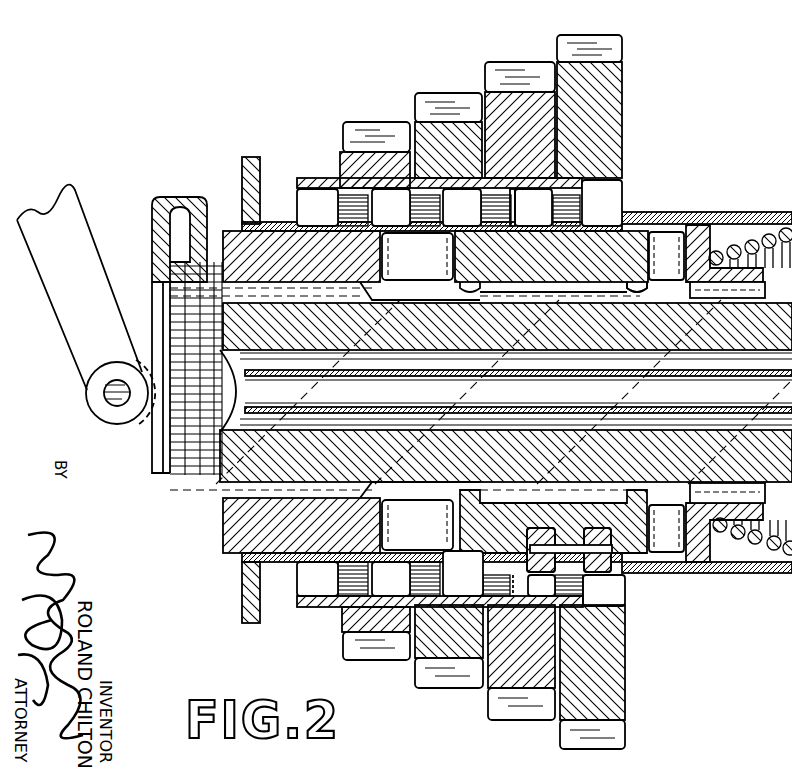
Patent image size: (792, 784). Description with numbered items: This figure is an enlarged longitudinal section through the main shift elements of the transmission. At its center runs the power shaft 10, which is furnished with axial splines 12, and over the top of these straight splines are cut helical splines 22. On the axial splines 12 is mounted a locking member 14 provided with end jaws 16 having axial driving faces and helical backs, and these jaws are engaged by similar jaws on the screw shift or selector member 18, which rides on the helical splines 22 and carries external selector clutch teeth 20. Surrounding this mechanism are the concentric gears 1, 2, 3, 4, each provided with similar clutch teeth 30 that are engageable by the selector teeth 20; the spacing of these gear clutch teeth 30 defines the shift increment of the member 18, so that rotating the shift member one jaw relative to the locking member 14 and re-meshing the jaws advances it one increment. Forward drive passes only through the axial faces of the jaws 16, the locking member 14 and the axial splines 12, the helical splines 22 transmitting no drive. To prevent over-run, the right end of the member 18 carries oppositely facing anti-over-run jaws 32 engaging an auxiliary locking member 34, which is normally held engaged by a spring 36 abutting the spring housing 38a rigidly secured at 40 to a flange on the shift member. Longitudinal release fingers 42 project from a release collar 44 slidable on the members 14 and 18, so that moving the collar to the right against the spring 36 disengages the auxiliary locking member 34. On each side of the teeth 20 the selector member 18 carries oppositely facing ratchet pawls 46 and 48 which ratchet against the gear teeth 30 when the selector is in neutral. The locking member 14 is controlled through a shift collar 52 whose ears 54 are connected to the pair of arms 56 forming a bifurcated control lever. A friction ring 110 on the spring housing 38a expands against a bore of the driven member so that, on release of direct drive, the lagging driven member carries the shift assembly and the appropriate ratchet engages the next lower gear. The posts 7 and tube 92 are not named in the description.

The first speed gear 1 is at (375, 391).
The second speed gear 2 is at (449, 390).
The third speed gear 3 is at (520, 391).
The fourth speed gear 4 is at (591, 392).
The spacer post 7 is at (511, 203).
The power shaft 10 is at (504, 392).
The axial splines 12 is at (667, 298).
The locking member 14 is at (240, 533).
The end jaws 16 is at (417, 391).
The screw shift selector member 18 is at (497, 520).
The selector clutch teeth 20 is at (585, 578).
The helical splines 22 is at (630, 294).
The gear clutch teeth 30 is at (559, 206).
The anti-over-run end jaws 32 is at (672, 242).
The auxiliary locking member 34 is at (712, 228).
The spring 36 is at (752, 250).
The spring housing 38a is at (778, 578).
The housing attachment 40 is at (647, 567).
The release fingers 42 is at (591, 226).
The release collar 44 is at (255, 137).
The ratchet pawl 46 is at (490, 566).
The ratchet pawl 48 is at (623, 573).
The shift collar 52 is at (178, 182).
The ears 54 is at (146, 418).
The control lever arms 56 is at (83, 238).
The tube 92 is at (765, 377).
The friction ring 110 is at (780, 606).